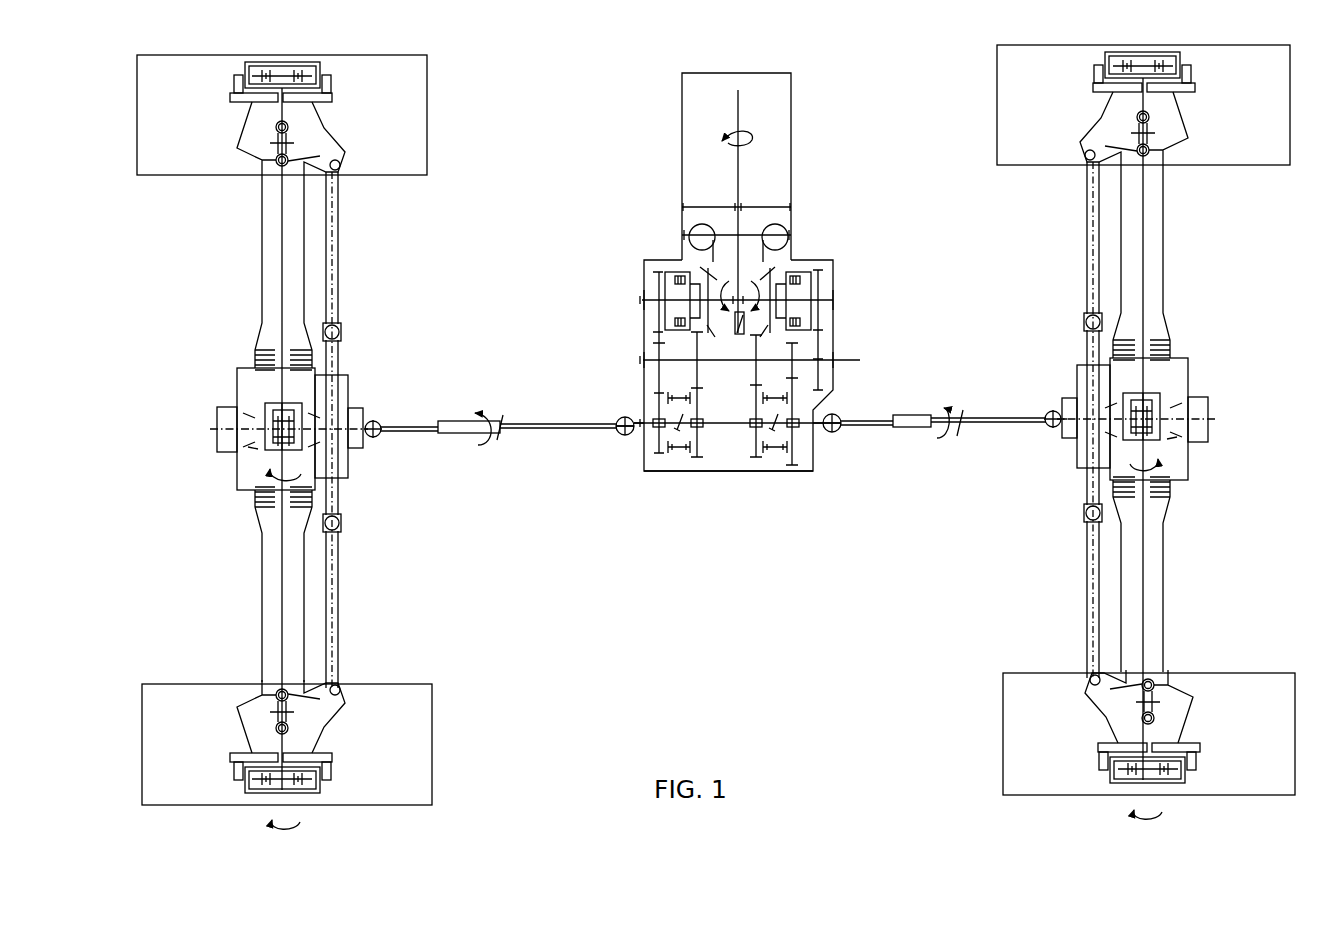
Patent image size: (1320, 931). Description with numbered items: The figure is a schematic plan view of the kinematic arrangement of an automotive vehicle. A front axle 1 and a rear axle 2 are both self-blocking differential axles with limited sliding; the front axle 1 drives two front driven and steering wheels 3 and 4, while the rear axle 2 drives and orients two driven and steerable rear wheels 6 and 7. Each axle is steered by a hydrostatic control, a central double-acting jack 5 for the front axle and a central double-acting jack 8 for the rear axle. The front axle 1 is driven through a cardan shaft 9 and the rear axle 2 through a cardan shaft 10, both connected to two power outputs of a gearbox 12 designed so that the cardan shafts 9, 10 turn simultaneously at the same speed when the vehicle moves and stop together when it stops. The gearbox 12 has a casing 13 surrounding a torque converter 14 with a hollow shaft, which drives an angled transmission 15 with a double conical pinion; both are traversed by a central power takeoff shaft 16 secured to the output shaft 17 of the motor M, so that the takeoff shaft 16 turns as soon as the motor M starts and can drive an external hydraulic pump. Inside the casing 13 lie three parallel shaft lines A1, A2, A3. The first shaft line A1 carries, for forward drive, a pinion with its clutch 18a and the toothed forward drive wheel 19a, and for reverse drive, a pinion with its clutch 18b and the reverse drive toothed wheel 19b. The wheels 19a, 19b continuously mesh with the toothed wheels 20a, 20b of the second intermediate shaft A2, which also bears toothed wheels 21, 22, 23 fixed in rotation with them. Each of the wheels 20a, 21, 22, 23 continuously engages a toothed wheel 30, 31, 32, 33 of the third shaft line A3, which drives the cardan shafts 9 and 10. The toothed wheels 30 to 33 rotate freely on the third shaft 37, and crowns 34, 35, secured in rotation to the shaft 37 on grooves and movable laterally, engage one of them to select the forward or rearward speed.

The front axle 1 is at (424, 219).
The rear axle 2 is at (1007, 210).
The front wheel 3 is at (436, 137).
The front wheel 4 is at (438, 733).
The central double-acting jack 5 is at (360, 378).
The rear wheel 6 is at (998, 725).
The rear wheel 7 is at (995, 134).
The central double-acting jack 8 is at (1072, 369).
The cardan shaft 9 is at (455, 412).
The cardan shaft 10 is at (979, 407).
The motor M is at (671, 130).
The gearbox 12 is at (602, 473).
The casing 13 is at (836, 249).
The torque converter 14 is at (775, 222).
The angled transmission 15 is at (774, 276).
The central shaft 16 is at (738, 278).
The output shaft 17 is at (738, 178).
The clutch 18a is at (678, 322).
The clutch 18b is at (795, 325).
The toothed forward drive wheel 19a is at (707, 290).
The reverse drive toothed wheel 19b is at (815, 295).
The toothed wheel 20a is at (690, 359).
The toothed wheel 20b is at (820, 385).
The toothed wheel 21 is at (697, 362).
The toothed wheel 22 is at (756, 371).
The toothed wheel 23 is at (793, 372).
The toothed wheel 30 is at (659, 448).
The toothed wheel 31 is at (704, 447).
The toothed wheel 32 is at (752, 440).
The toothed wheel 33 is at (795, 455).
The crown 34 is at (678, 450).
The crown 35 is at (773, 445).
The third shaft 37 is at (727, 432).
The first shaft line A1 is at (833, 297).
The second intermediate shaft A2 is at (848, 360).
The third shaft line A3 is at (820, 427).